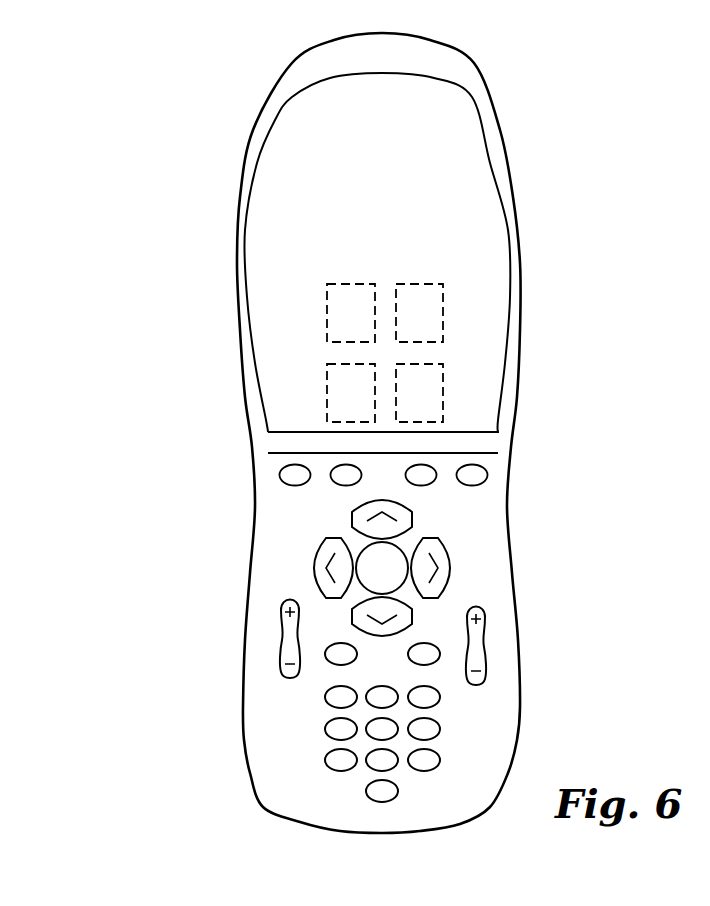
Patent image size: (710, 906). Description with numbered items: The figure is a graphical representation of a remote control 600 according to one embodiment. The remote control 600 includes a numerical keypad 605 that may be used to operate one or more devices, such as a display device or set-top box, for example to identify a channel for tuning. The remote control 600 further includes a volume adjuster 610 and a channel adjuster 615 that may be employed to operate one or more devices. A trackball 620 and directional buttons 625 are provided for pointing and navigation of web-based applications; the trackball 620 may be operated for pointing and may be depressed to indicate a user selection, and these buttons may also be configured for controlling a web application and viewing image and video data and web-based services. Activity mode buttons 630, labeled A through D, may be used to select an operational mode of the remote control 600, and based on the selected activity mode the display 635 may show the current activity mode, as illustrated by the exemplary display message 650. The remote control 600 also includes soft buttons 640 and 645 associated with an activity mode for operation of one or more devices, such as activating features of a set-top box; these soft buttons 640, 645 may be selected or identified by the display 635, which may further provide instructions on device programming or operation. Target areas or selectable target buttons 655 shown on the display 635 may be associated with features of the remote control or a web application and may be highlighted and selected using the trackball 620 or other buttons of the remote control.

The remote control 600 is at (481, 74).
The numerical keypad 605 is at (442, 730).
The volume adjuster 610 is at (283, 640).
The channel adjuster 615 is at (481, 652).
The trackball 620 is at (403, 583).
The directional buttons 625 is at (443, 548).
The activity mode buttons 630 is at (493, 470).
The display 635 is at (490, 362).
The soft button 640 is at (338, 640).
The soft button 645 is at (433, 638).
The display message 650 is at (317, 251).
The target buttons 655 is at (327, 352).